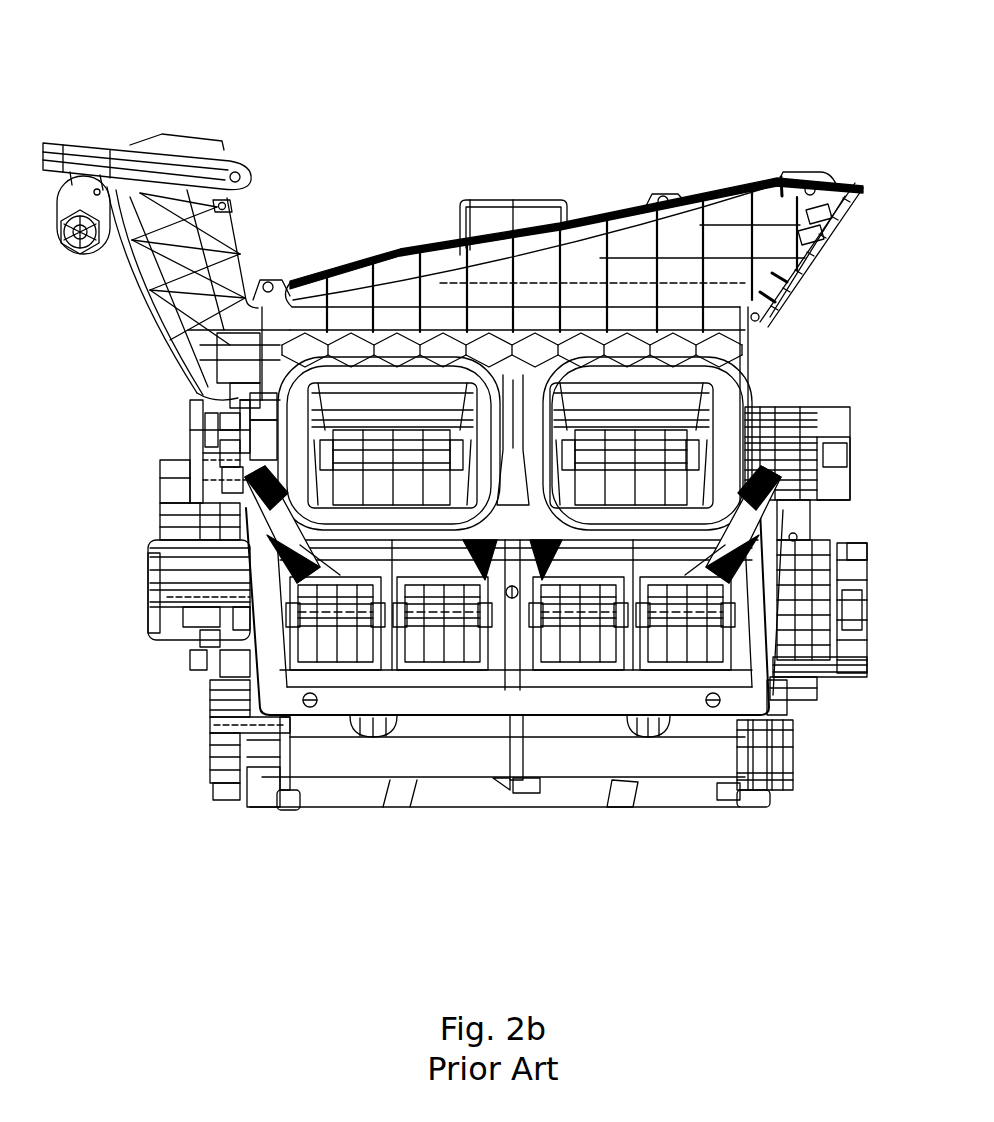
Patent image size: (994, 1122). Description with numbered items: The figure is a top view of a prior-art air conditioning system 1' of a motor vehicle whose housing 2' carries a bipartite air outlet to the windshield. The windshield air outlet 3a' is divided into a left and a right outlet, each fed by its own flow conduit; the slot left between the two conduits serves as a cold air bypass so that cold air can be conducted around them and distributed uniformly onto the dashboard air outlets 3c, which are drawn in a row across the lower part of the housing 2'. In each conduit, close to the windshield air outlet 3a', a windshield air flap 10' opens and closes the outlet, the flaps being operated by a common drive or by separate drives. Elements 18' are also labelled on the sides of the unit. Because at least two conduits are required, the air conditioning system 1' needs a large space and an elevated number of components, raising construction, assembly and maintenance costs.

The air conditioning system 1' is at (455, 420).
The housing 2' is at (572, 328).
The windshield air outlet 3a' is at (515, 275).
The dashboard air outlet 3c is at (327, 640).
The windshield air flap 10' is at (478, 417).
The flaps 18' is at (482, 655).